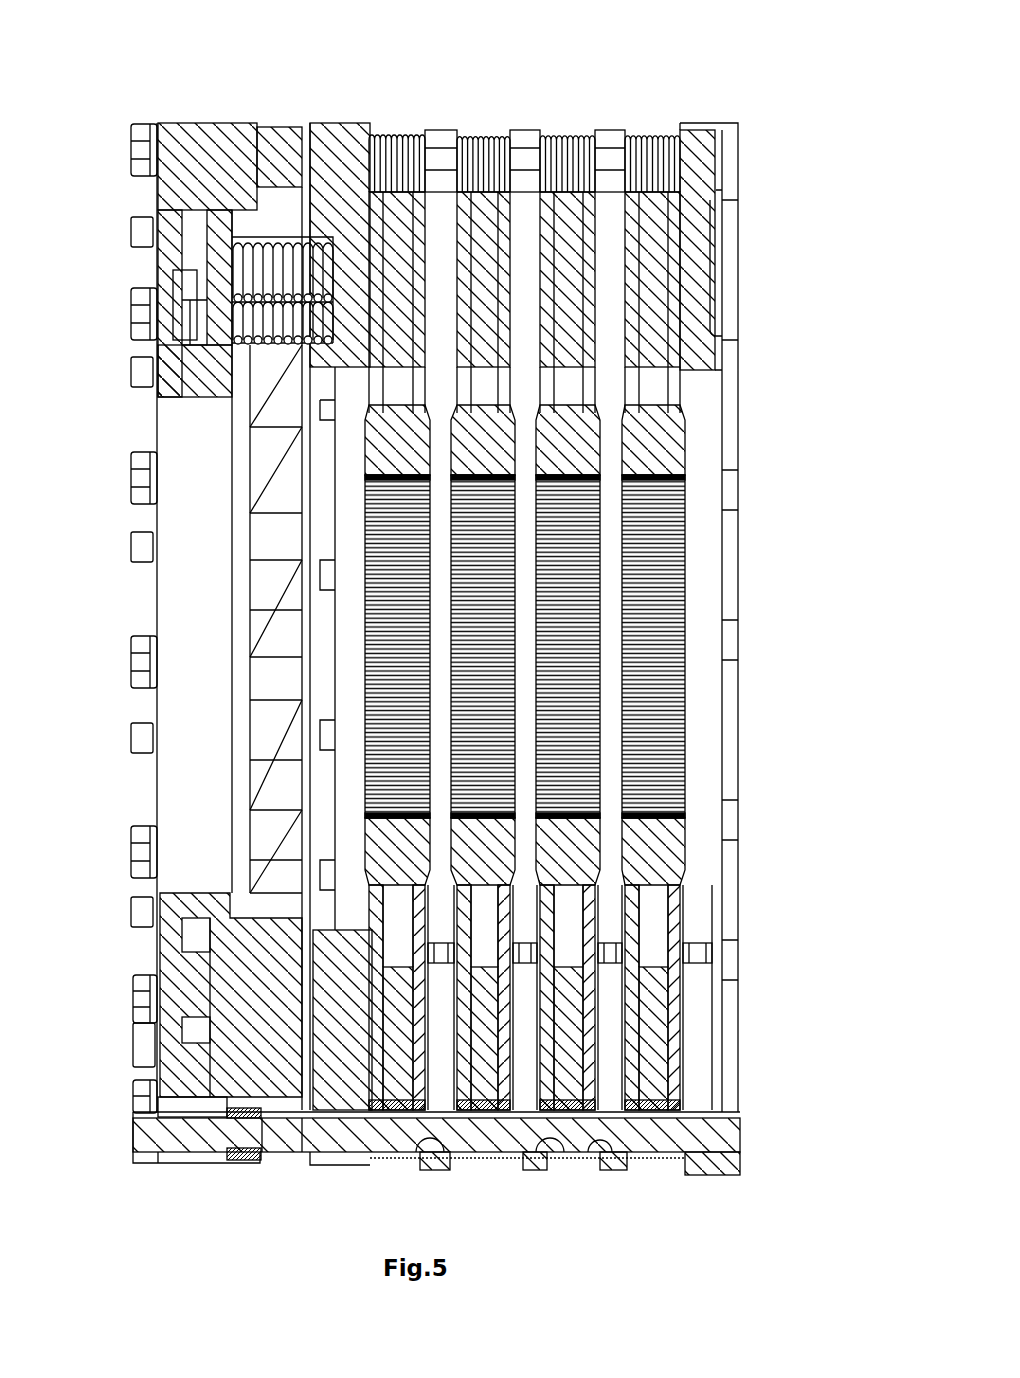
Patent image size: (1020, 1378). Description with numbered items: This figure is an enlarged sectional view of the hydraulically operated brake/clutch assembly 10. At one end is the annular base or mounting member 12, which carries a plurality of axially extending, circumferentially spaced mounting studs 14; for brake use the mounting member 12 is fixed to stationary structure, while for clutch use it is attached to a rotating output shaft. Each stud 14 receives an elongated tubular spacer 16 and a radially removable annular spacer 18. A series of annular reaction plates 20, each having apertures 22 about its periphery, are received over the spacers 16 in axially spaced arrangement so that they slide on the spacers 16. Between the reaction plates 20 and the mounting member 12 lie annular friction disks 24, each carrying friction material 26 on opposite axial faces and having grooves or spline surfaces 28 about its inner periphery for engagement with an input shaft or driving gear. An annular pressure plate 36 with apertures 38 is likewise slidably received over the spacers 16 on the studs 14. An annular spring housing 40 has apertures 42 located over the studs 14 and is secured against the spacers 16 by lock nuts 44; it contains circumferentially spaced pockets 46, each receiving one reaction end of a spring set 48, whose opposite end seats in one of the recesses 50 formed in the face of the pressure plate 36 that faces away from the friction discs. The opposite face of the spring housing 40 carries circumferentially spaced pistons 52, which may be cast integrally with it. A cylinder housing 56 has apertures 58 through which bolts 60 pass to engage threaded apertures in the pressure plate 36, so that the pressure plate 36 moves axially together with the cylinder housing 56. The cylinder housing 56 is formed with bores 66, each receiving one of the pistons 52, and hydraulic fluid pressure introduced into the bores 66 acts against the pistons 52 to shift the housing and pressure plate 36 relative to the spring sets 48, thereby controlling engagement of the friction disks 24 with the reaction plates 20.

The hydraulically operated brake/clutch assembly 10 is at (190, 62).
The annular base or mounting member 12 is at (740, 168).
The mounting studs 14 is at (140, 232).
The elongated tubular spacer 16 is at (388, 133).
The radially removable annular spacer 18 is at (700, 128).
The reaction plates 20 is at (440, 130).
The apertures 22 is at (415, 1135).
The annular friction disk 24 is at (405, 135).
The friction material 26 is at (680, 1060).
The grooves or spline surfaces 28 is at (655, 700).
The annular pressure plate 36 is at (328, 123).
The apertures 38 is at (350, 1152).
The annular spring housing 40 is at (275, 127).
The apertures 42 is at (300, 1162).
The lock nuts 44 is at (250, 1162).
The pockets 46 is at (205, 300).
The spring set 48 is at (217, 349).
The recesses 50 is at (232, 237).
The pistons 52 is at (163, 328).
The cylinder housing 56 is at (165, 126).
The apertures 58 is at (215, 1107).
The bolts 60 is at (135, 150).
The bores 66 is at (178, 278).